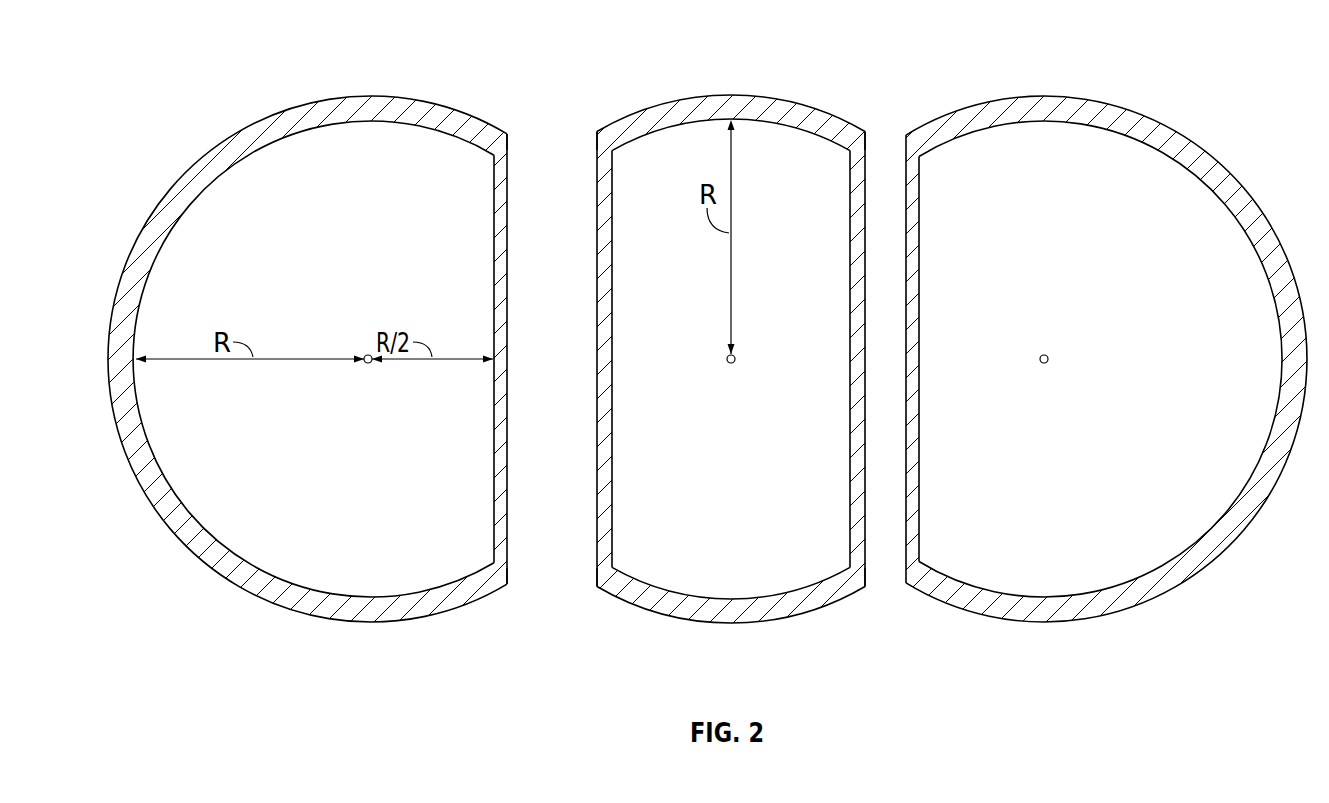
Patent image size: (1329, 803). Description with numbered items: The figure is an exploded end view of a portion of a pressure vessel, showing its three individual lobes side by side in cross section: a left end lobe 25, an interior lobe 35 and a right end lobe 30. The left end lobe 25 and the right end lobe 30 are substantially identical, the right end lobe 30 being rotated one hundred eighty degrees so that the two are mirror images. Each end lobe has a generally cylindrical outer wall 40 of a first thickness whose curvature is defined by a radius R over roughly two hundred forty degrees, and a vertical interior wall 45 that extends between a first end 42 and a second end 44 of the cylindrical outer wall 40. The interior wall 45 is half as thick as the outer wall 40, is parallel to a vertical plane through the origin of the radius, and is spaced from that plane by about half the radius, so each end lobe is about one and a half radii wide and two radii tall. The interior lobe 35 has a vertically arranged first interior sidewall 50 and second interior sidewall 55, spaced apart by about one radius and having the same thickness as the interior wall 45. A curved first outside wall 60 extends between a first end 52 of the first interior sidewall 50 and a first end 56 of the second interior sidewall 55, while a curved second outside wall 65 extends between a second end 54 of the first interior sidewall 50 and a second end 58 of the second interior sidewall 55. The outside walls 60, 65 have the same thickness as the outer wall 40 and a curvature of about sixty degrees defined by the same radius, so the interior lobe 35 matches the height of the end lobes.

The left end lobe 25 is at (211, 110).
The right end lobe 30 is at (1183, 93).
The interior lobe 35 is at (729, 72).
The cylindrical outer wall 40 is at (282, 607).
The first end 42 is at (509, 135).
The second end 44 is at (508, 579).
The interior wall 45 is at (494, 458).
The first interior sidewall 50 is at (612, 234).
The first end 52 is at (596, 133).
The second end 54 is at (597, 582).
The second interior sidewall 55 is at (850, 452).
The first end 56 is at (866, 133).
The second end 58 is at (866, 582).
The first outside wall 60 is at (795, 101).
The second outside wall 65 is at (728, 624).